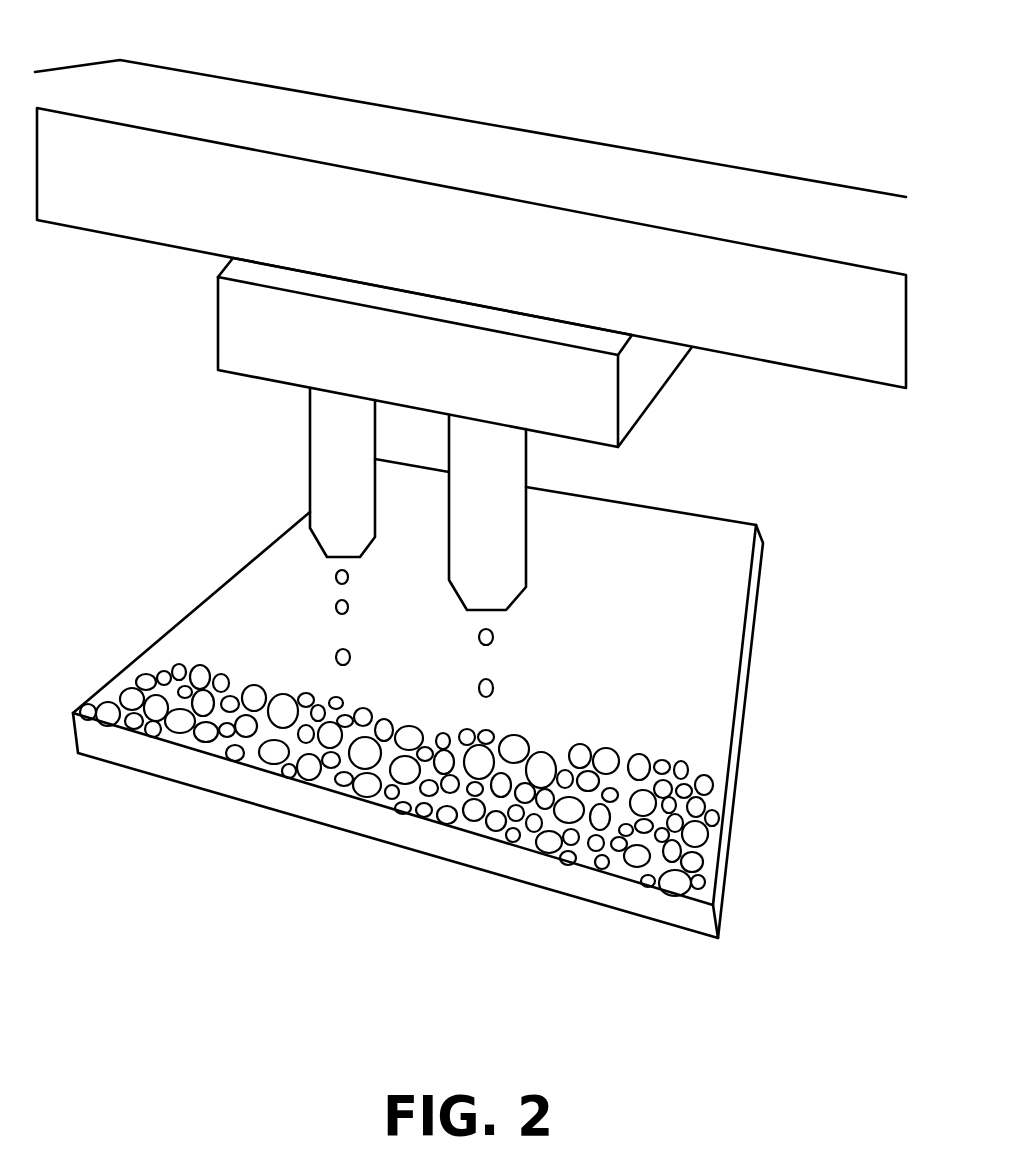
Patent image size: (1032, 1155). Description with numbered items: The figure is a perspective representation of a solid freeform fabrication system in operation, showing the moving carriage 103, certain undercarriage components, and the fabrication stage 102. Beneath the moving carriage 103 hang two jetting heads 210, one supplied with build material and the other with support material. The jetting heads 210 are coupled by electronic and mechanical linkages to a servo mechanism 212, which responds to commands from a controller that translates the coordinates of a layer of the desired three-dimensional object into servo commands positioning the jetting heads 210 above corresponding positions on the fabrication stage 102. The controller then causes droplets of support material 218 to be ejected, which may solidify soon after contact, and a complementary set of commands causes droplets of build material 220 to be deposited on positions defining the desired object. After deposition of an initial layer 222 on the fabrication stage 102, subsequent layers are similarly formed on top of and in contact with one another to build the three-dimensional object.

The moving carriage 103 is at (392, 147).
The servo mechanism 212 is at (262, 310).
The jetting head 210 is at (338, 450).
The droplets of support material 218 is at (336, 657).
The droplets of build material 220 is at (493, 637).
The fabrication stage 102 is at (382, 819).
The initial layer 222 is at (760, 876).